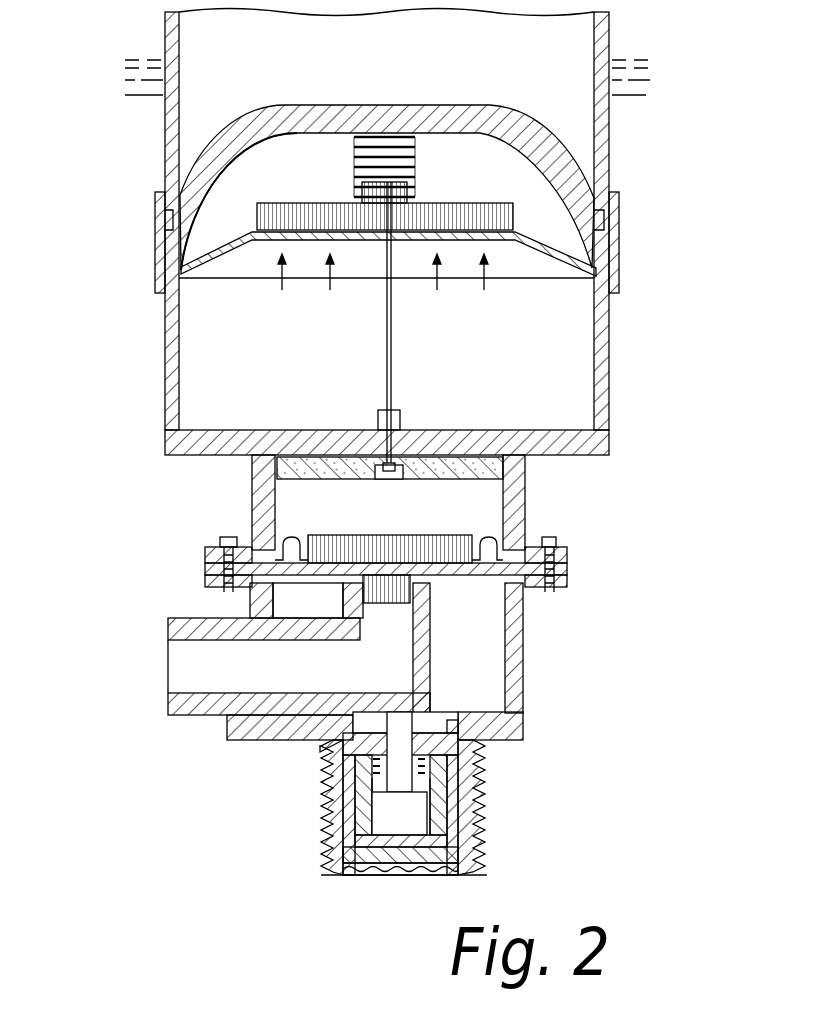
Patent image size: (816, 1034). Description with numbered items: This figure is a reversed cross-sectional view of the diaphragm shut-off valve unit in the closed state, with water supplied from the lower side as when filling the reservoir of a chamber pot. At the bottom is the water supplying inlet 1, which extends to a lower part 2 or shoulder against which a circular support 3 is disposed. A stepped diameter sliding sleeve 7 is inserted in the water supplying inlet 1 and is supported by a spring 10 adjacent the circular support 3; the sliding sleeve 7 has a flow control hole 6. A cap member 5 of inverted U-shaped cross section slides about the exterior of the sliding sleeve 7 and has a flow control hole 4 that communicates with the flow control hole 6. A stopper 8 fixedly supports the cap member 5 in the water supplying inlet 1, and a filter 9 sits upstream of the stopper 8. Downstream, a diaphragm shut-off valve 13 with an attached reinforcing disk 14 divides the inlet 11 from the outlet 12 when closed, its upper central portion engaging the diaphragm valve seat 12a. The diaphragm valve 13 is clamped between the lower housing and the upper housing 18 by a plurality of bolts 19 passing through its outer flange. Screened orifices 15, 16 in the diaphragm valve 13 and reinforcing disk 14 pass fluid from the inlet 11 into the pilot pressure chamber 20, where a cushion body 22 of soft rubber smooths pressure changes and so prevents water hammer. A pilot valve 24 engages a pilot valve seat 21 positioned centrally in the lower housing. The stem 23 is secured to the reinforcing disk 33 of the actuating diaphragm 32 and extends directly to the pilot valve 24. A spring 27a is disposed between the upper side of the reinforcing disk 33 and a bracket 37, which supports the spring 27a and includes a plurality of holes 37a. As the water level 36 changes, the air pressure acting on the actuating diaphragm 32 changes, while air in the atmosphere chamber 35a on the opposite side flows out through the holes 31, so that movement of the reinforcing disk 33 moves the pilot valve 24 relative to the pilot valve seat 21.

The water supplying inlet 1 is at (476, 774).
The lower part 2 is at (456, 730).
The circular support 3 is at (456, 738).
The flow control hole 4 is at (440, 816).
The cap member 5 is at (452, 840).
The flow control hole 6 is at (368, 812).
The sliding sleeve 7 is at (362, 785).
The stopper 8 is at (365, 858).
The filter 9 is at (400, 870).
The spring 10 is at (368, 768).
The inlet 11 is at (488, 632).
The outlet 12 is at (180, 660).
The diaphragm valve seat 12a is at (420, 578).
The diaphragm shut-off valve 13 is at (486, 546).
The reinforcing disk 14 is at (420, 546).
The screened orifice 15 is at (330, 582).
The screened orifice 16 is at (338, 540).
The upper housing 18 is at (246, 596).
The bolts 19 is at (558, 542).
The pilot pressure chamber 20 is at (508, 512).
The pilot valve seat 21 is at (368, 470).
The cushion body 22 is at (495, 466).
The stem 23 is at (385, 332).
The pilot valve 24 is at (396, 480).
The spring 27a is at (416, 155).
The holes 31 is at (605, 308).
The actuating diaphragm 32 is at (566, 252).
The reinforcing disk 33 is at (312, 215).
The atmosphere chamber 35a is at (588, 118).
The water level 36 is at (130, 56).
The bracket 37 is at (482, 116).
The holes 37a is at (236, 137).